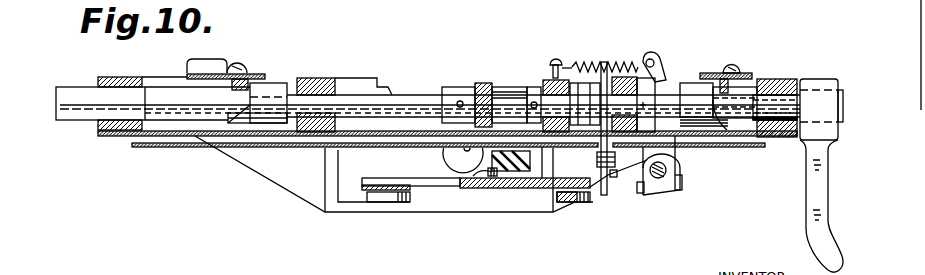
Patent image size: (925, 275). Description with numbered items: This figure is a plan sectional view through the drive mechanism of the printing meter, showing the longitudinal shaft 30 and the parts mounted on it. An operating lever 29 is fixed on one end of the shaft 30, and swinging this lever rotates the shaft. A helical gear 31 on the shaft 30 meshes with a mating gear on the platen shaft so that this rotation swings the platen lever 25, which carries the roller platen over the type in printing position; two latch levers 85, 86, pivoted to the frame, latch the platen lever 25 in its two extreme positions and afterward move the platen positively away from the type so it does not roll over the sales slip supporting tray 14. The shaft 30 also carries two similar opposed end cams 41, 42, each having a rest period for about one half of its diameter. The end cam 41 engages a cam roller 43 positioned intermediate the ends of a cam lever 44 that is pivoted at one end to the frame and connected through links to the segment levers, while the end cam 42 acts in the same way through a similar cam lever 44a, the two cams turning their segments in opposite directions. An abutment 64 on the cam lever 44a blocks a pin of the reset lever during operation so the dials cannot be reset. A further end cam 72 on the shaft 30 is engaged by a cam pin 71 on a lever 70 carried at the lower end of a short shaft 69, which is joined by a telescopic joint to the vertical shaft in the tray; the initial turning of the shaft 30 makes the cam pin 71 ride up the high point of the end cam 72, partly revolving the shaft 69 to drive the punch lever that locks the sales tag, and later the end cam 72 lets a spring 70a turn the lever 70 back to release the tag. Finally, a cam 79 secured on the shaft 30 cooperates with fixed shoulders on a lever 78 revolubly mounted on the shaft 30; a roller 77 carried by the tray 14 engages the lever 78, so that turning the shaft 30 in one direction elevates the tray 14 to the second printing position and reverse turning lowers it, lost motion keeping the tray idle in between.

The sales slip supporting tray 14 is at (170, 149).
The platen lever 25 is at (518, 168).
The operating lever 29 is at (815, 216).
The shaft 30 is at (403, 100).
The helical gear 31 is at (477, 85).
The end cam 41 is at (741, 148).
The end cam 42 is at (246, 104).
The cam roller 43 is at (730, 87).
The cam lever 44 is at (715, 72).
The cam lever 44a is at (312, 59).
The abutment 64 is at (204, 60).
The short shaft 69 is at (667, 170).
The lever 70 is at (654, 60).
The spring 70a is at (622, 38).
The cam pin 71 is at (723, 72).
The end cam 72 is at (656, 112).
The roller 77 is at (617, 168).
The lever 78 is at (606, 196).
The cam 79 is at (576, 86).
The latch lever 85 is at (362, 190).
The latch lever 86 is at (577, 203).